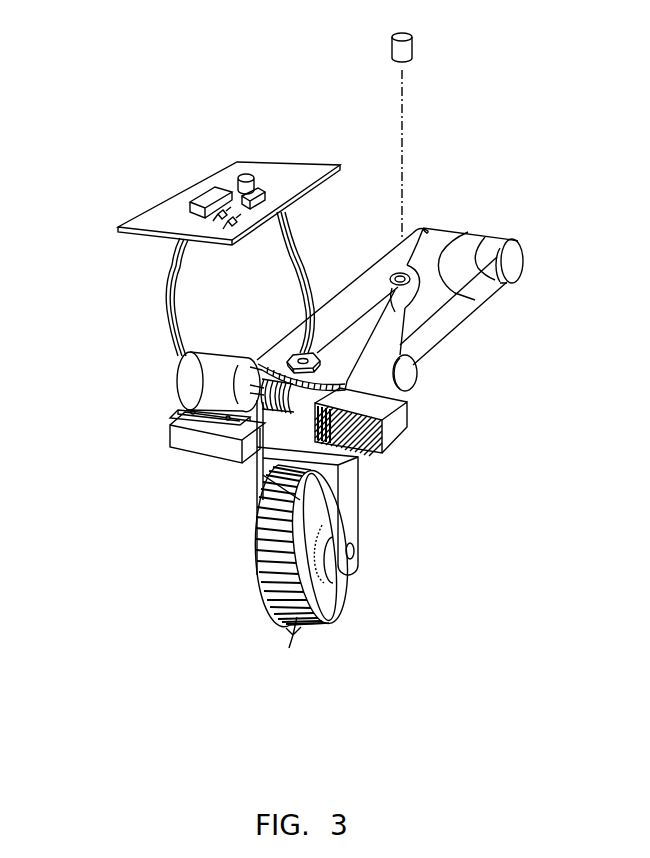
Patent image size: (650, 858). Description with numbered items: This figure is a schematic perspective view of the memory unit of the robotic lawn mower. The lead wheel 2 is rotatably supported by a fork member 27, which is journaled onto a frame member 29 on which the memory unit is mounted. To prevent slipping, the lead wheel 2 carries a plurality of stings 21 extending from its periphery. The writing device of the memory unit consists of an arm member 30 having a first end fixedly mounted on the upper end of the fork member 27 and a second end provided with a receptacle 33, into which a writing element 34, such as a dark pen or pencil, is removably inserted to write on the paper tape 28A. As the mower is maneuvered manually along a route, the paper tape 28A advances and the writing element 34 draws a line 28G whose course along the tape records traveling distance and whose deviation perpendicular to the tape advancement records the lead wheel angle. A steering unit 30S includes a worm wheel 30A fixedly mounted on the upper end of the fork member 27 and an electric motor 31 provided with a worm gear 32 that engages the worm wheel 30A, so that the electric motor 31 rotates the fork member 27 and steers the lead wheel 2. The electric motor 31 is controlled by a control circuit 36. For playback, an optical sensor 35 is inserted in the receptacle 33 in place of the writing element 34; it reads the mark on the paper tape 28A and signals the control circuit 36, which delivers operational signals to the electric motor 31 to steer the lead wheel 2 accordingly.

The lead wheel 2 is at (290, 648).
The stings 21 is at (258, 578).
The fork member 27 is at (352, 487).
The paper tape 28A is at (477, 250).
The line 28G is at (453, 250).
The frame member 29 is at (383, 408).
The arm member 30 is at (357, 347).
The worm wheel 30A is at (290, 465).
The steering unit 30S is at (167, 545).
The electric motor 31 is at (203, 388).
The worm gear 32 is at (293, 395).
The receptacle 33 is at (412, 262).
The writing element 34 is at (413, 302).
The optical sensor 35 is at (413, 42).
The control circuit 36 is at (258, 181).